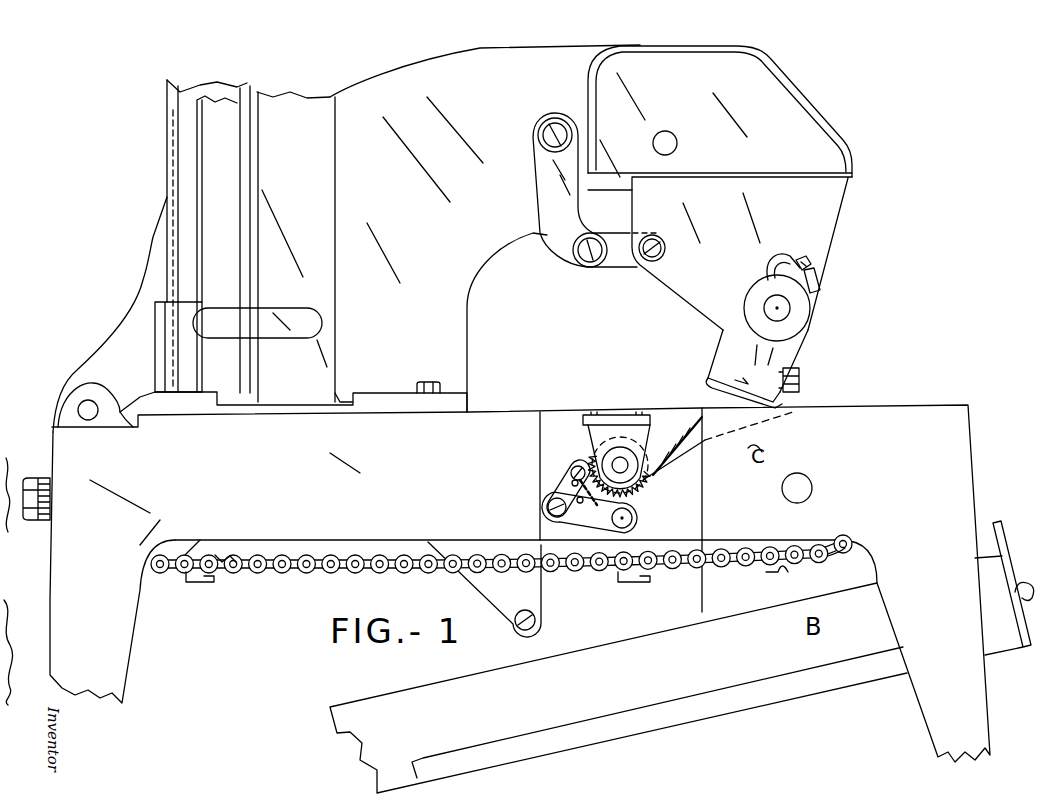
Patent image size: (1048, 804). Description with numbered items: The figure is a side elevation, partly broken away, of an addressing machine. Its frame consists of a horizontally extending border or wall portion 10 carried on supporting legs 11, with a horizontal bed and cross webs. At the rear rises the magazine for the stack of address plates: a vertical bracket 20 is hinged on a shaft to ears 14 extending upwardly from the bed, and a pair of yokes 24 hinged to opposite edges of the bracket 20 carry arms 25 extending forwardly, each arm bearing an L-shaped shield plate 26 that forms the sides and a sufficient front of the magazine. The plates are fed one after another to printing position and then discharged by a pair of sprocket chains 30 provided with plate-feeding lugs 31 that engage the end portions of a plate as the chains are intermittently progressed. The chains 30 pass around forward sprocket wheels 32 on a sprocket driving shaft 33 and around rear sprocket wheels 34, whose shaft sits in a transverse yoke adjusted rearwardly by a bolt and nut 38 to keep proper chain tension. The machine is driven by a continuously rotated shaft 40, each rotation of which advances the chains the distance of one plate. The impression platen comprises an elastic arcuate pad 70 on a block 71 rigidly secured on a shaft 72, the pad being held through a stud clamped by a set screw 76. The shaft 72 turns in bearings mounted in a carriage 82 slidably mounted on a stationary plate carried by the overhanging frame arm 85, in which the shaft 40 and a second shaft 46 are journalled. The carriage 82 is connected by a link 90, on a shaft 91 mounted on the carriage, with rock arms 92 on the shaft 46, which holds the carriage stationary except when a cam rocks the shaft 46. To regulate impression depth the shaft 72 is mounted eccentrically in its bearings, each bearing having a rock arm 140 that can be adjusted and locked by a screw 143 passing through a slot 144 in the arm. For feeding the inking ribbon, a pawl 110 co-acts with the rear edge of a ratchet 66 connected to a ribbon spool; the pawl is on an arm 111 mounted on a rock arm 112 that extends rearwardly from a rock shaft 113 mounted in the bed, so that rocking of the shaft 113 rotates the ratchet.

The border or wall portion 10 is at (543, 513).
The supporting legs 11 is at (124, 647).
The ears 14 is at (105, 425).
The vertical bracket 20 is at (125, 340).
The yokes 24 is at (311, 246).
The arms 25 is at (303, 310).
The L-shaped shield plate 26 is at (448, 223).
The sprocket chains 30 is at (297, 566).
The plate-feeding lugs 31 is at (192, 575).
The forward sprocket wheels 32 is at (812, 560).
The sprocket driving shaft 33 is at (810, 480).
The rear sprocket wheels 34 is at (226, 552).
The nut 38 is at (52, 500).
The continuously rotated shaft 40 is at (680, 146).
The shaft 46 is at (551, 125).
The ratchet 66 is at (590, 456).
The elastic arcuate pad 70 is at (712, 390).
The block 71 is at (722, 356).
The shaft 72 is at (790, 310).
The set screw 76 is at (803, 380).
The carriage 82 is at (825, 196).
The overhanging frame arm 85 is at (780, 90).
The link 90 is at (614, 270).
The shaft 91 is at (655, 238).
The rock arms 92 is at (546, 207).
The pawl 110 is at (575, 463).
The arm 111 is at (548, 500).
The rock arm 112 is at (578, 494).
The rock shaft 113 is at (634, 518).
The rock arm 140 is at (768, 274).
The screw 143 is at (802, 258).
The slot 144 is at (822, 288).